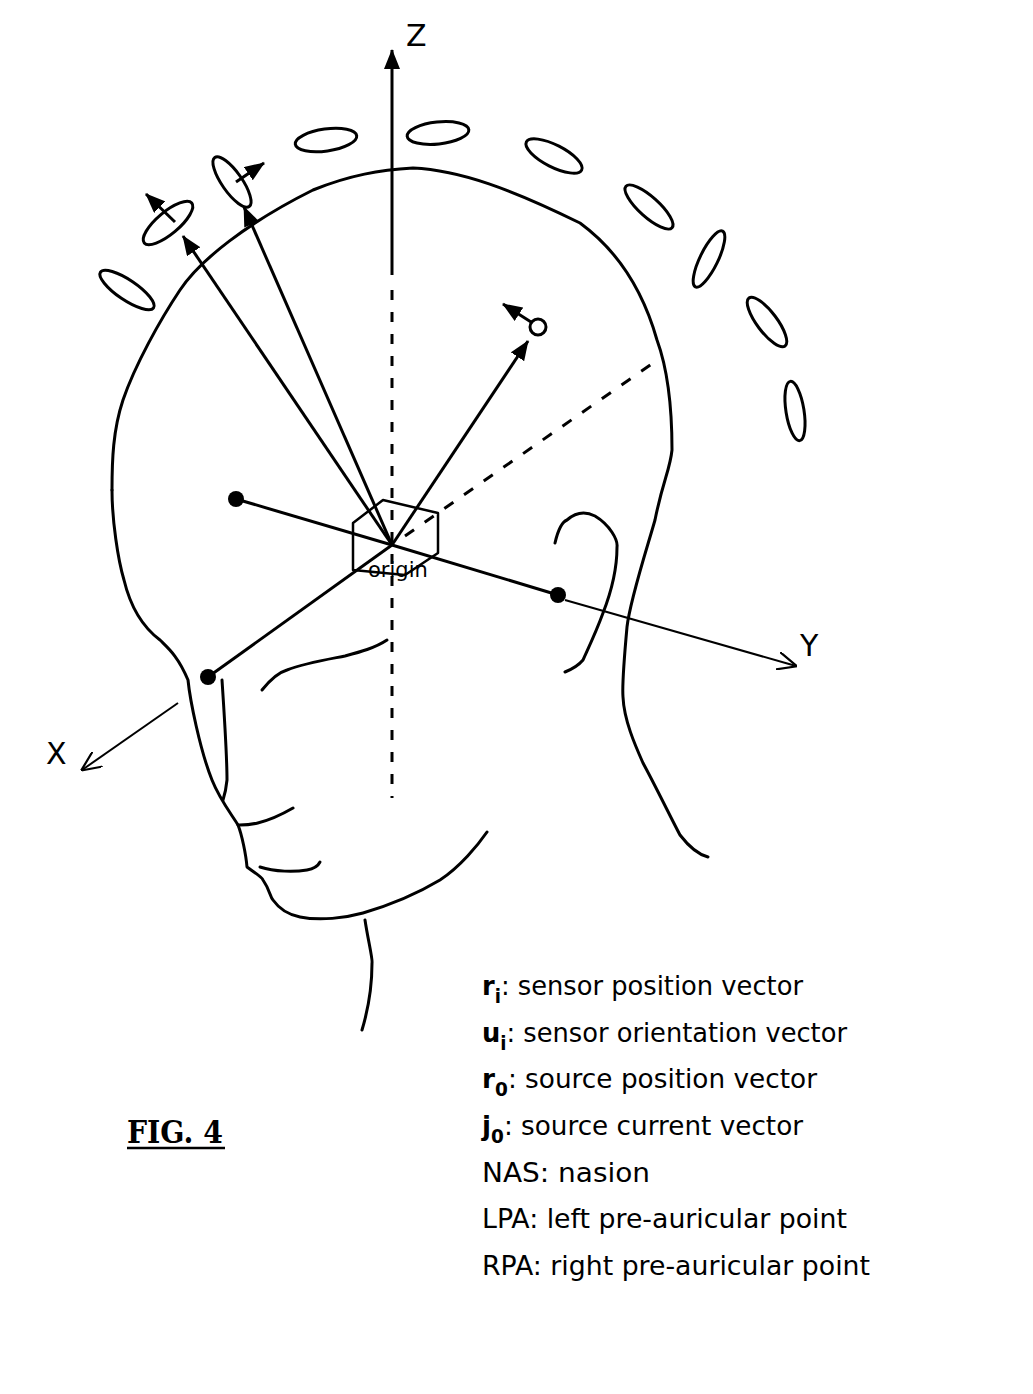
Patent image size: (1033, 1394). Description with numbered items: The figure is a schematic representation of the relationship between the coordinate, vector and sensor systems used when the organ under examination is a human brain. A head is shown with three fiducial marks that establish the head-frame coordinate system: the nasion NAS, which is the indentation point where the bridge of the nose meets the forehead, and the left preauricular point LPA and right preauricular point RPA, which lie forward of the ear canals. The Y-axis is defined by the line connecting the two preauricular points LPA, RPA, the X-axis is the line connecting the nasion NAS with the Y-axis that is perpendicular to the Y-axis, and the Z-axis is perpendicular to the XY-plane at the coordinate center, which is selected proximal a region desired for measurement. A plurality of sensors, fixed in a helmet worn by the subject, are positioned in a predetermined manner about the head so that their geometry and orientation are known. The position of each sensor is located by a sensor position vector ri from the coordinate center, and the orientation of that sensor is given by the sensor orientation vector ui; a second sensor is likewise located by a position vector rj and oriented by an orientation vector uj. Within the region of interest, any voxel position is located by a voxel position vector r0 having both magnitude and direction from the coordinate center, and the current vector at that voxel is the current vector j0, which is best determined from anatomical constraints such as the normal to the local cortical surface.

The sensor position vector ri is at (299, 348).
The sensor orientation vector ui is at (256, 154).
The sensor position vector rj is at (264, 370).
The sensor orientation vector uj is at (137, 198).
The voxel position vector r0 is at (469, 432).
The current vector j0 is at (506, 290).
The nasion NAS is at (286, 615).
The left preauricular point LPA is at (479, 588).
The right preauricular point RPA is at (307, 503).